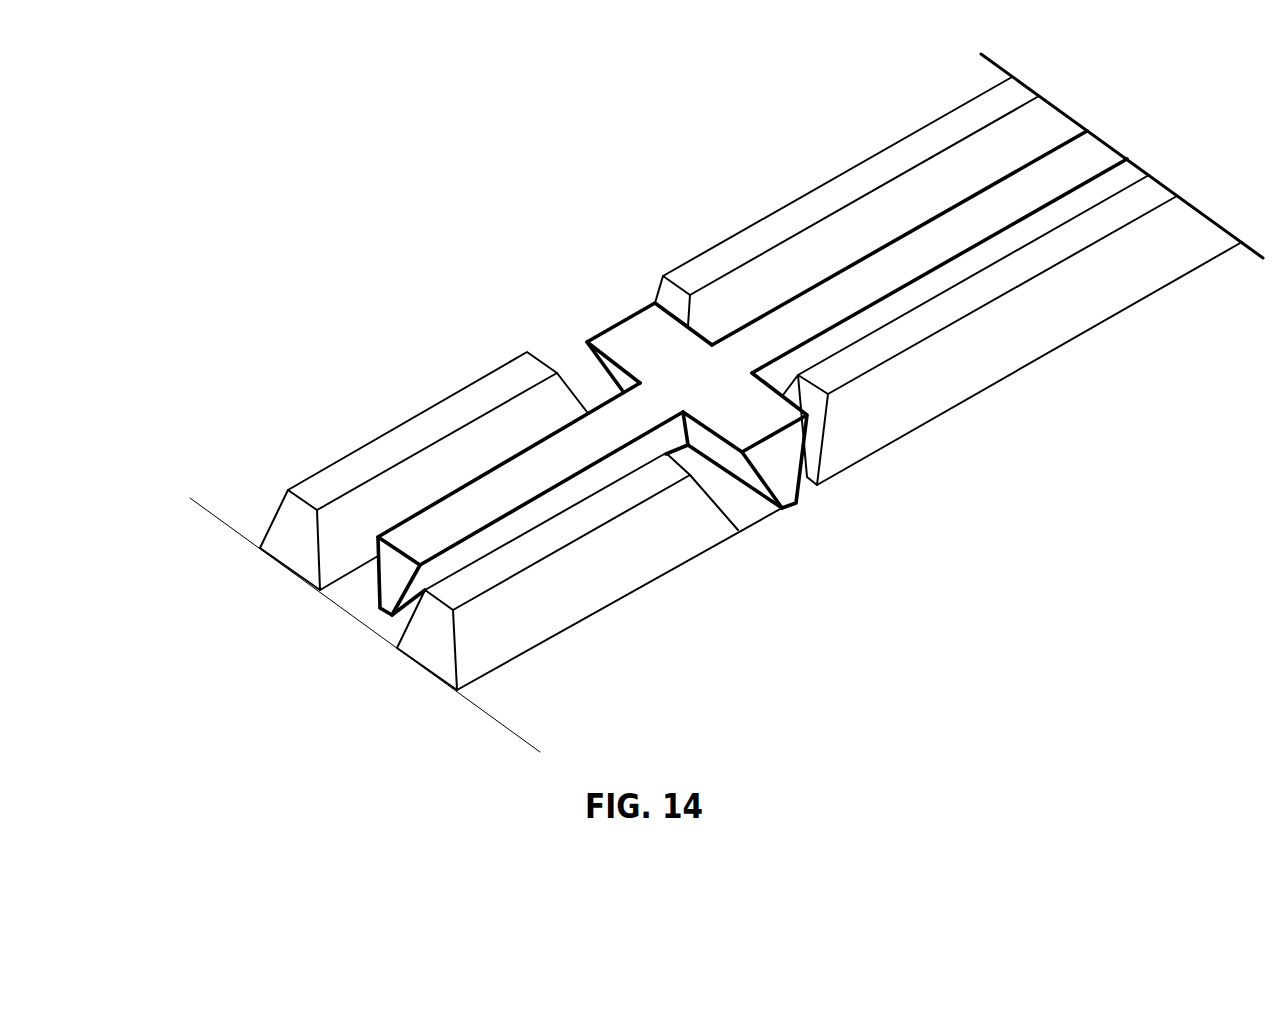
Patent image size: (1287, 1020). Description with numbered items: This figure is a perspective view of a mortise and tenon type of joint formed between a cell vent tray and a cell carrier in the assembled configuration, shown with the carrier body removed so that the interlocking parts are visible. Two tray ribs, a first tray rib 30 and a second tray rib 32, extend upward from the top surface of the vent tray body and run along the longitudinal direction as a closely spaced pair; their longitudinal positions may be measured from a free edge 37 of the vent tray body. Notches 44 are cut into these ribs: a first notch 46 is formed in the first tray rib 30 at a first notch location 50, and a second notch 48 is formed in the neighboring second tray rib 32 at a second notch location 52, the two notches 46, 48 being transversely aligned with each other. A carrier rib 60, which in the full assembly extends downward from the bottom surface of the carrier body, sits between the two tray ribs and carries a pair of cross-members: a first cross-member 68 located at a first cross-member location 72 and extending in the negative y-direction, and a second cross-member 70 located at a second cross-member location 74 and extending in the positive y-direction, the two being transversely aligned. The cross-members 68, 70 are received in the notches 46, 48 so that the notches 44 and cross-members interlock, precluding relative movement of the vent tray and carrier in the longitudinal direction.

The first tray rib 30 is at (440, 413).
The second tray rib 32 is at (605, 587).
The free edge 37 is at (218, 517).
The notches 44 is at (736, 371).
The first notch 46 is at (528, 303).
The second notch 48 is at (896, 371).
The first notch location 50 is at (542, 305).
The second notch location 52 is at (805, 547).
The carrier rib 60 is at (440, 523).
The first cross-member 68 is at (649, 303).
The second cross-member 70 is at (736, 338).
The first cross-member location 72 is at (623, 340).
The second cross-member location 74 is at (752, 422).